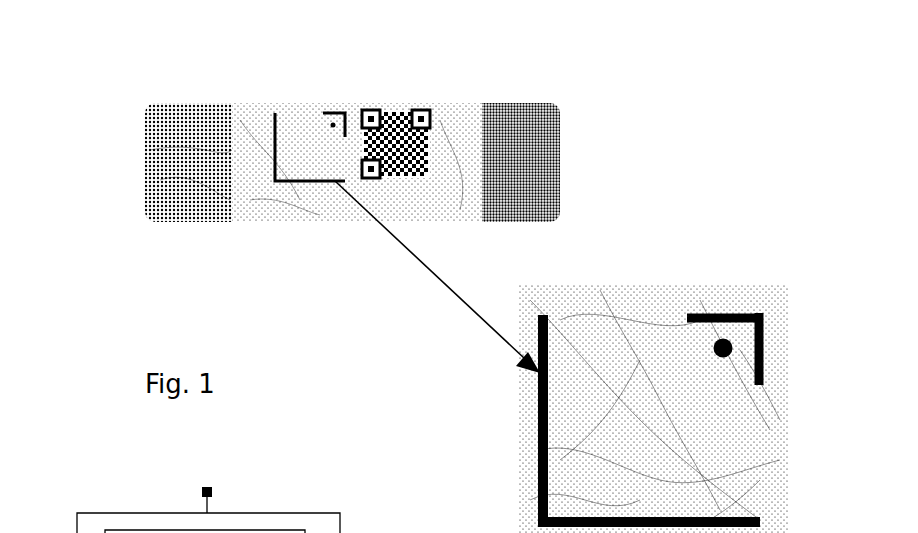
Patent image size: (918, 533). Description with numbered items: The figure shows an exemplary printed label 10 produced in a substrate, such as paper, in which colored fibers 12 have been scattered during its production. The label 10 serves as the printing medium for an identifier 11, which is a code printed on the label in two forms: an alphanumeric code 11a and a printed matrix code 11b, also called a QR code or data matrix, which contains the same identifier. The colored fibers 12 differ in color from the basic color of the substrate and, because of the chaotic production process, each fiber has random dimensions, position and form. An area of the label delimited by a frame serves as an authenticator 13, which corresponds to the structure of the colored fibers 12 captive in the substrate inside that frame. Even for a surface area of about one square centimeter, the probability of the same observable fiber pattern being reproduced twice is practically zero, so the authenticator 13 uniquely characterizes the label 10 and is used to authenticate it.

The label 10 is at (133, 237).
The identifier 11 is at (407, 212).
The alphanumeric code 11a is at (303, 216).
The printed matrix code 11b is at (430, 138).
The colored fibers 12 is at (617, 355).
The authenticator 13 is at (307, 130).